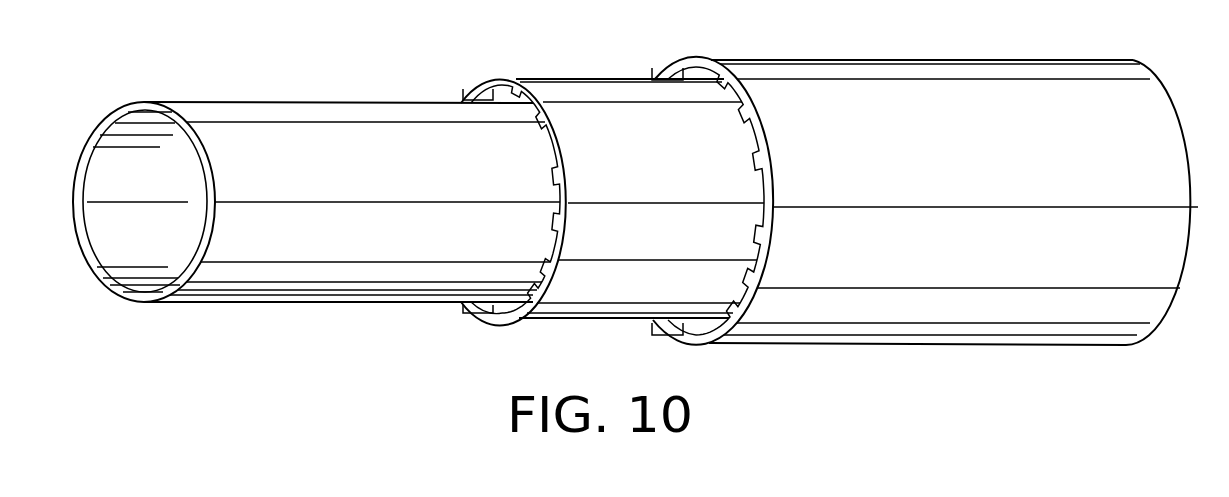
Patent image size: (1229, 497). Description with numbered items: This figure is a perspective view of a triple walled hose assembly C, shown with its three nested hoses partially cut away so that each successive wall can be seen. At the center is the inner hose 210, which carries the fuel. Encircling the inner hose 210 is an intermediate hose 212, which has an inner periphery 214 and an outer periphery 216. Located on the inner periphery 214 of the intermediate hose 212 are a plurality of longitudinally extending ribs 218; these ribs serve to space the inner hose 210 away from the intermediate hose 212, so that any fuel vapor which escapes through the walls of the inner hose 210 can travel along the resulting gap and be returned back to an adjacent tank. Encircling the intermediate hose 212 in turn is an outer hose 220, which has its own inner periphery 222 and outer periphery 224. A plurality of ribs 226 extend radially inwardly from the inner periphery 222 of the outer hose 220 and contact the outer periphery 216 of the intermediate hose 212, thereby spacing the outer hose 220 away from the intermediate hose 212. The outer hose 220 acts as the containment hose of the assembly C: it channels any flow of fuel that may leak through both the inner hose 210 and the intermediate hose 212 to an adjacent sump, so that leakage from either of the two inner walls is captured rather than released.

The inner hose 210 is at (245, 116).
The intermediate hose 212 is at (581, 66).
The inner periphery 214 is at (476, 92).
The outer periphery 216 is at (557, 292).
The longitudinally extending ribs 218 is at (537, 268).
The outer hose 220 is at (846, 338).
The inner periphery 222 is at (758, 198).
The outer periphery 224 is at (937, 78).
The ribs 226 is at (730, 118).
The triple walled hose assembly C is at (772, 50).